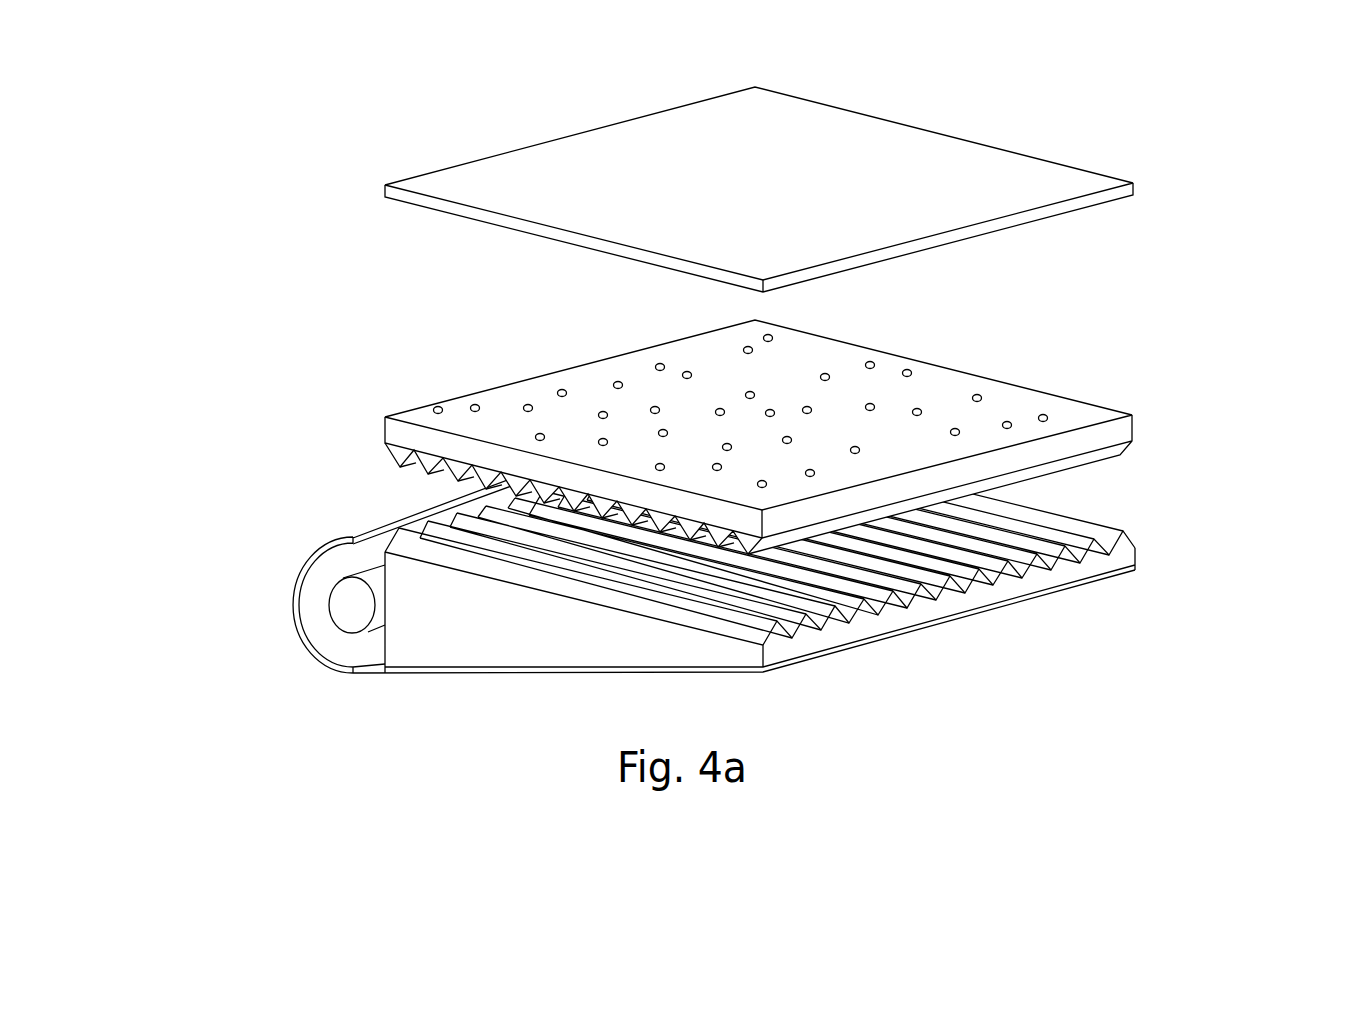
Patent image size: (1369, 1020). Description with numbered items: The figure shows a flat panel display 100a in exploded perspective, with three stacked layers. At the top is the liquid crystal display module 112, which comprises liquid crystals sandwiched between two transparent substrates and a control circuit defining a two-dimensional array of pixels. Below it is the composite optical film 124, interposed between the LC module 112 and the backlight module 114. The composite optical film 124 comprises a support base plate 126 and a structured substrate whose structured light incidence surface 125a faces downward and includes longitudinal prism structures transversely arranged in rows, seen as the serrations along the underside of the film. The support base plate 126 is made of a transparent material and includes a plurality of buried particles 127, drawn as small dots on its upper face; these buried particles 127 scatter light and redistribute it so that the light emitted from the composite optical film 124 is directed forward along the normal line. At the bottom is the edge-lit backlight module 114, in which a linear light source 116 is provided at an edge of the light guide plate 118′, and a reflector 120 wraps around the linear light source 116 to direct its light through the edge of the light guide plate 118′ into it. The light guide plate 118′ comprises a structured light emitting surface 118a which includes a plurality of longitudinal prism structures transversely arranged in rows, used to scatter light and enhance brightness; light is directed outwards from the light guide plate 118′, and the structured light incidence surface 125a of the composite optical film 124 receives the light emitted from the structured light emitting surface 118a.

The flat panel display 100a is at (697, 430).
The liquid crystal display module 112 is at (383, 190).
The composite optical film 124 is at (622, 437).
The support base plate 126 is at (400, 430).
The structured light incidence surface 125a is at (395, 457).
The buried particles 127 is at (434, 408).
The backlight module 114 is at (592, 606).
The reflector 120 is at (301, 557).
The linear light source 116 is at (326, 605).
The light guide plate 118′ is at (385, 648).
The structured light emitting surface 118a is at (738, 622).